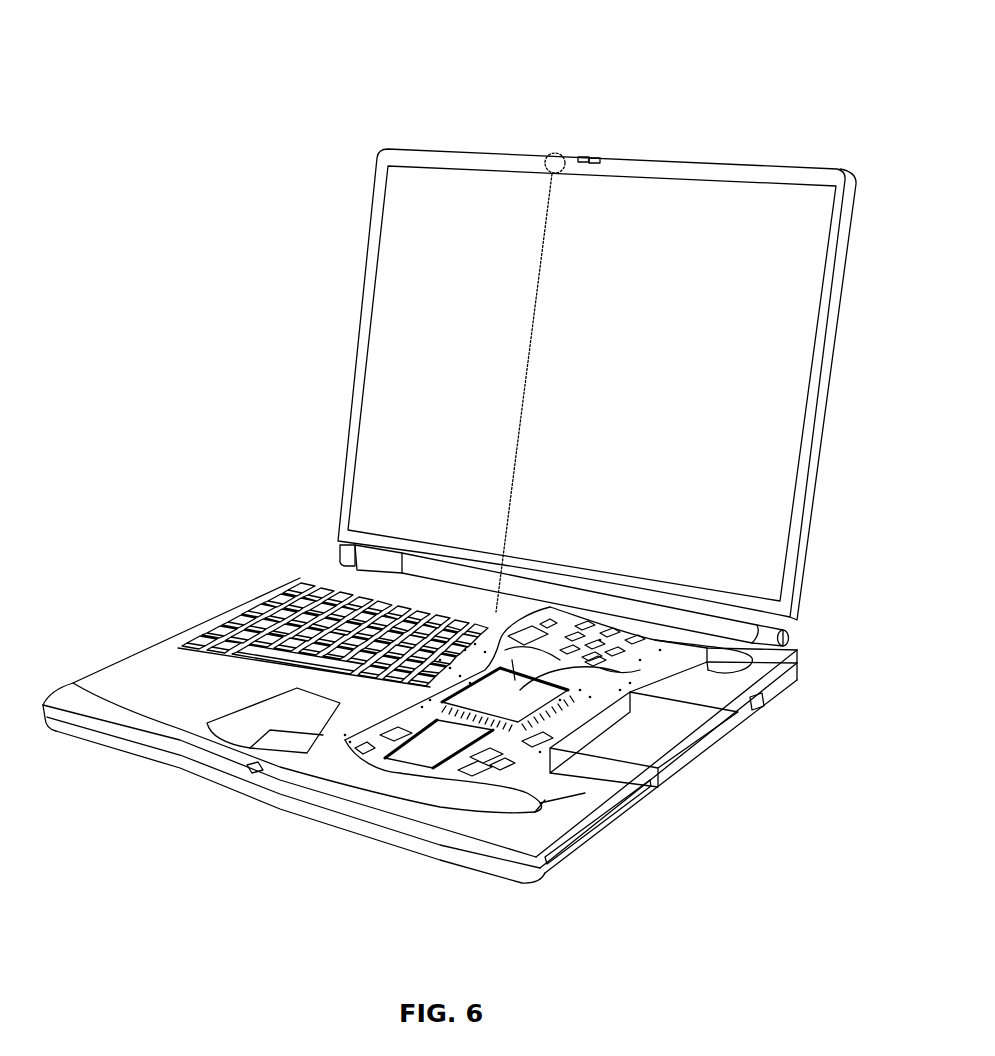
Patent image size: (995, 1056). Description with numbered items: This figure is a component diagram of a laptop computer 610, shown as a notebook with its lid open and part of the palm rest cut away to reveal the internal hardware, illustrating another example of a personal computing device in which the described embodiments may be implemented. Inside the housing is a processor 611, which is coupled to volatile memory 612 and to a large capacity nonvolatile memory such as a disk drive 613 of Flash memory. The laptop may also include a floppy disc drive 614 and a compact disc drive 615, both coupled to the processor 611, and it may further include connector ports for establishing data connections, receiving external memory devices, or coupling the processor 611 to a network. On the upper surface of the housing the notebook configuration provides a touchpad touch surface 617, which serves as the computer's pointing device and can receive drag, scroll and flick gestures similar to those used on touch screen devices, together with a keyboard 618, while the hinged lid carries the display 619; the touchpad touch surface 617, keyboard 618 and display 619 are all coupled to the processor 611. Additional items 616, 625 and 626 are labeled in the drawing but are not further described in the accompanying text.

The computing device 610 is at (754, 151).
The processor 611 is at (514, 705).
The volatile memory 612 is at (437, 747).
The disk drive 613 is at (553, 785).
The floppy disc drive 614 is at (625, 737).
The compact disc (CD) drive 615 is at (693, 680).
The cooling fan 616 is at (603, 657).
The touchpad touch surface 617 is at (275, 713).
The keyboard 618 is at (232, 629).
The display 619 is at (792, 563).
The connector 625 is at (650, 690).
The camera 626 is at (546, 160).